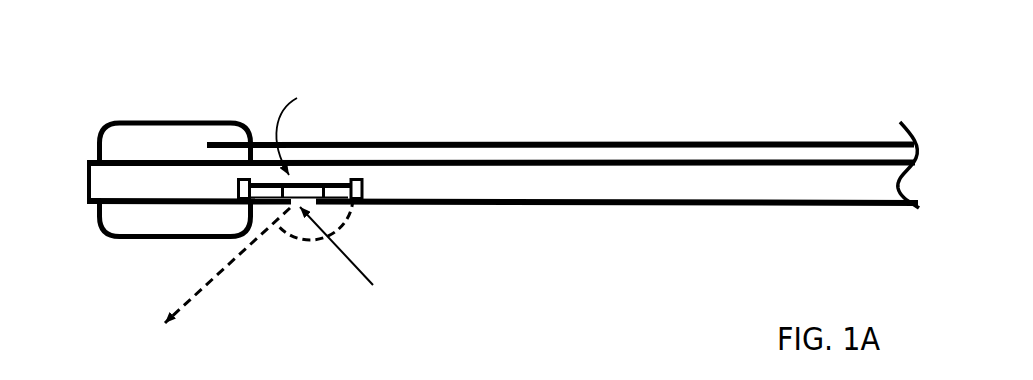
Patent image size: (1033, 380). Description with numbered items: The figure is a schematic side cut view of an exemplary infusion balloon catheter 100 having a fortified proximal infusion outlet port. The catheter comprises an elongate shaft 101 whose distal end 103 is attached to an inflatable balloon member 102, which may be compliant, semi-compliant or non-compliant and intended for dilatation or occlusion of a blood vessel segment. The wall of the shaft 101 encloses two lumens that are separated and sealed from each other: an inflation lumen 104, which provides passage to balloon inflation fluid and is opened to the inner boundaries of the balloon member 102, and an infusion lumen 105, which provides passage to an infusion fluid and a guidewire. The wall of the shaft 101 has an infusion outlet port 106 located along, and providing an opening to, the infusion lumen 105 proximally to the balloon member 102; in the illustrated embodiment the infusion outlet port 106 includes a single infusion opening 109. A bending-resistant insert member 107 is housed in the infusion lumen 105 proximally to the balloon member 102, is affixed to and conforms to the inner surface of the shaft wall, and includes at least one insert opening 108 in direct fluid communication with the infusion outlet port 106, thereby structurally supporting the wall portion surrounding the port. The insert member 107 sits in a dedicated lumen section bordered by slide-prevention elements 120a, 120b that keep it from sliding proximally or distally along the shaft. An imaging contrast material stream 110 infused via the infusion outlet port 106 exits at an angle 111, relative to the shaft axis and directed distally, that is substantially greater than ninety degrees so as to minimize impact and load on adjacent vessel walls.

The infusion balloon catheter 100 is at (498, 80).
The shaft 101 is at (645, 211).
The balloon member 102 is at (147, 121).
The distal end 103 is at (230, 205).
The inflation lumen 104 is at (733, 157).
The infusion lumen 105 is at (803, 183).
The infusion outlet port 106 is at (315, 200).
The bending-resistant insert member 107 is at (332, 182).
The insert opening 108 is at (296, 125).
The infusion opening 109 is at (358, 257).
The imaging contrast material stream 110 is at (207, 290).
The angle 111 is at (297, 234).
The slide-prevention element 120a is at (365, 181).
The slide-prevention element 120b is at (237, 183).